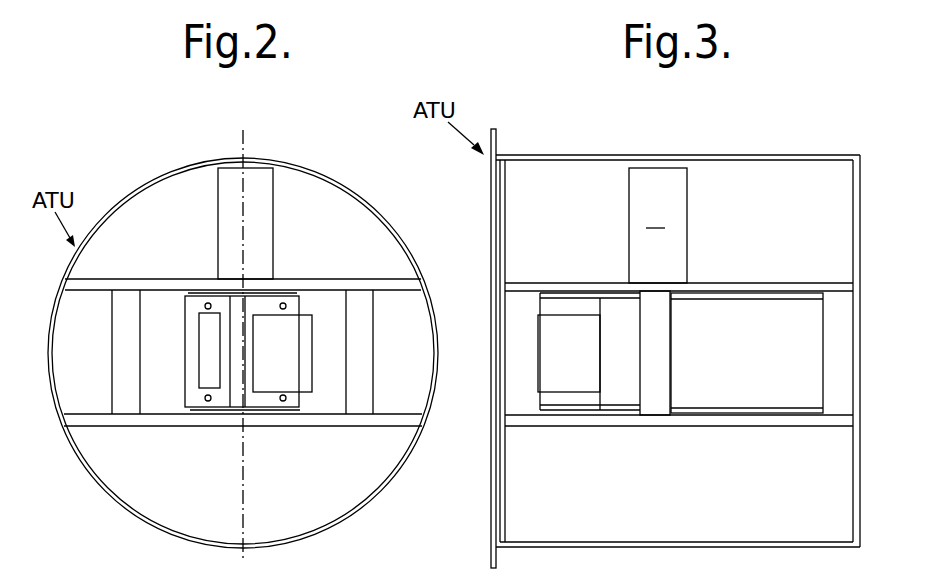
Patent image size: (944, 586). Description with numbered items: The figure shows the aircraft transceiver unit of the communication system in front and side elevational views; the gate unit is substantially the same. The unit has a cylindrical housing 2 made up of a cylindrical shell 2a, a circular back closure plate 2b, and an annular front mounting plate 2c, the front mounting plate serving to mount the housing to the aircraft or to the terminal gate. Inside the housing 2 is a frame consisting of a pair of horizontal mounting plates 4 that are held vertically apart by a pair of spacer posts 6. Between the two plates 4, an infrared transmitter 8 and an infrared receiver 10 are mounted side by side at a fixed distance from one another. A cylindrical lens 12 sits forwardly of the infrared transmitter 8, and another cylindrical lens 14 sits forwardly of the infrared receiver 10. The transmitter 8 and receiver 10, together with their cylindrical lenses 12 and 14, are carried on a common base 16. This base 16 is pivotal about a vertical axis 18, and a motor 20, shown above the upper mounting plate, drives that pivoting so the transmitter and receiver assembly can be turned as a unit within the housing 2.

In FIG. 2, the cylindrical housing 2 is at (147, 181).
In FIG. 3, the cylindrical housing 2 is at (634, 149).
In FIG. 3, the cylindrical shell 2a is at (796, 155).
In FIG. 3, the circular back closure plate 2b is at (852, 212).
In FIG. 3, the annular front mounting plate 2c is at (498, 136).
In FIG. 2, the horizontal mounting plates 4 is at (326, 280).
In FIG. 3, the horizontal mounting plates 4 is at (742, 283).
In FIG. 2, the spacer posts 6 is at (124, 299).
In FIG. 3, the spacer posts 6 is at (672, 338).
In FIG. 2, the infrared transmitter 8 is at (293, 299).
In FIG. 2, the infrared receiver 10 is at (200, 298).
In FIG. 3, the infrared receiver 10 is at (681, 353).
In FIG. 2, the cylindrical lens 12 is at (297, 340).
In FIG. 3, the cylindrical lens 12 is at (569, 353).
In FIG. 2, the cylindrical lens 14 is at (203, 338).
In FIG. 2, the common base 16 is at (232, 412).
In FIG. 2, the vertical axis 18 is at (245, 497).
In FIG. 2, the motor 20 is at (218, 203).
In FIG. 3, the motor 20 is at (688, 200).